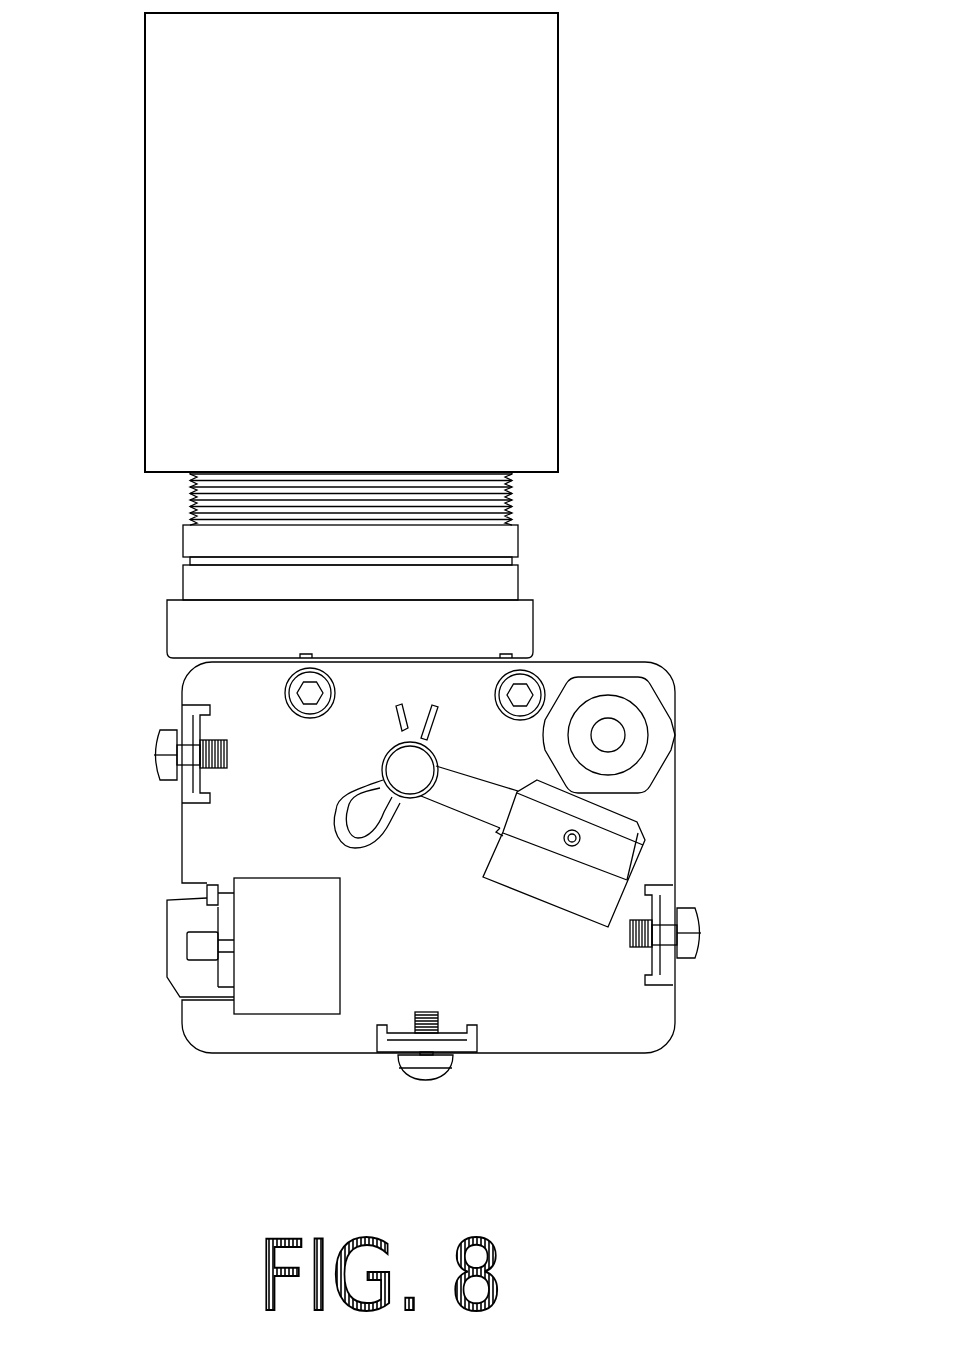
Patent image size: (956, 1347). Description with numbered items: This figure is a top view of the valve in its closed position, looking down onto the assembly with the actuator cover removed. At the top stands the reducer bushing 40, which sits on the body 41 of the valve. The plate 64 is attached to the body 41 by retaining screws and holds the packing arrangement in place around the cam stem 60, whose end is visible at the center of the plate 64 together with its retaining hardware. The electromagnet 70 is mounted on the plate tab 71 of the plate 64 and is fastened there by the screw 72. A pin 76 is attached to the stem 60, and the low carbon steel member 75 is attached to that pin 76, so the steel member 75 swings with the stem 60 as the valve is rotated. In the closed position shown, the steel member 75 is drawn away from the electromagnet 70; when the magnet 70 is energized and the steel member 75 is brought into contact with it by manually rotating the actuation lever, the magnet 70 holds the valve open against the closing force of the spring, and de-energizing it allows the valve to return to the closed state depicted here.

The reducer bushing 40 is at (366, 288).
The body 41 is at (510, 637).
The cam stem 60 is at (410, 768).
The plate 64 is at (284, 813).
The electromagnet 70 is at (293, 973).
The plate tab 71 is at (230, 970).
The screw 72 is at (203, 946).
The low carbon steel member 75 is at (560, 890).
The pin 76 is at (468, 793).